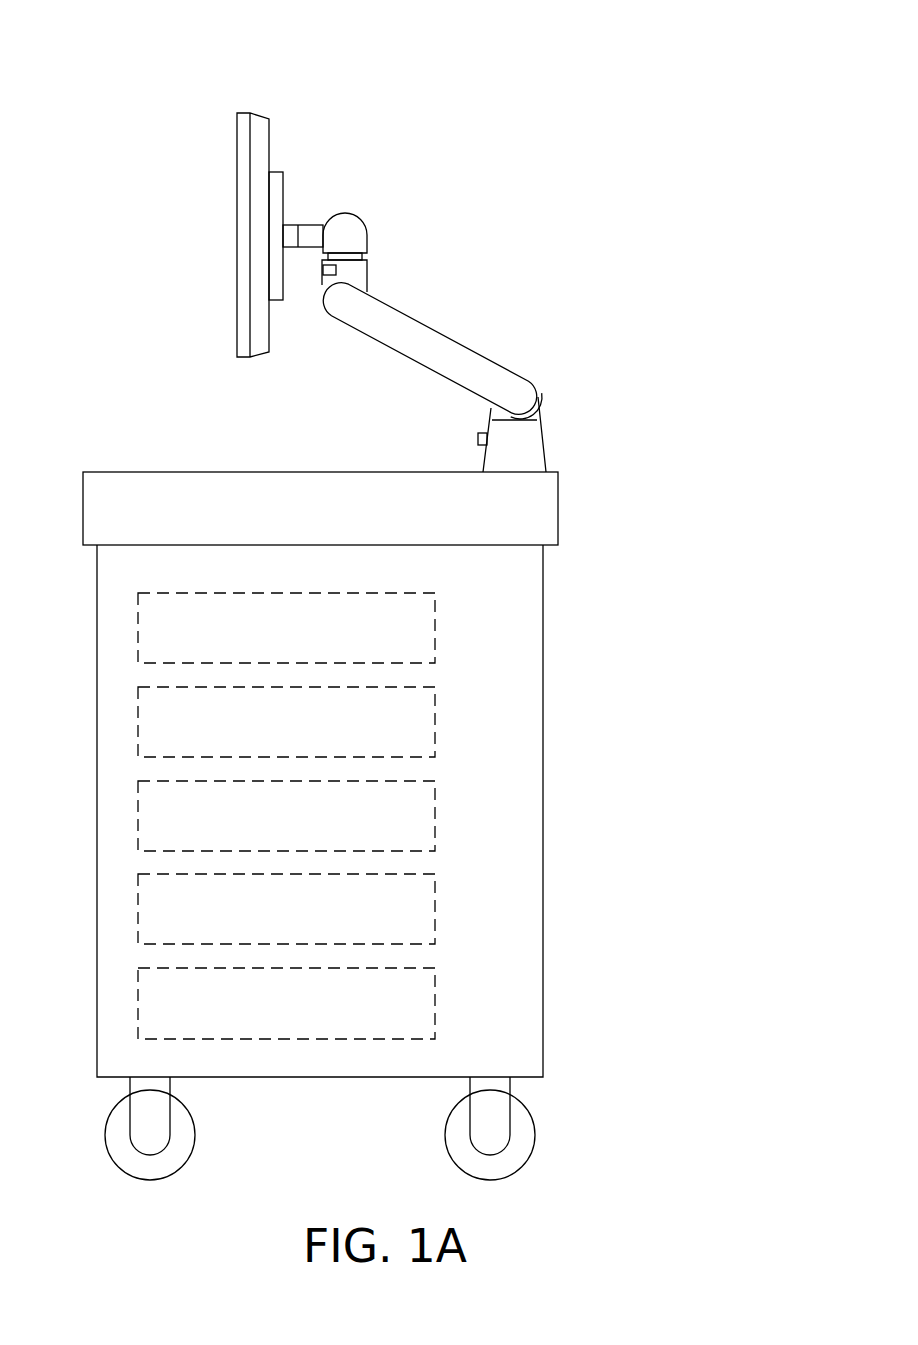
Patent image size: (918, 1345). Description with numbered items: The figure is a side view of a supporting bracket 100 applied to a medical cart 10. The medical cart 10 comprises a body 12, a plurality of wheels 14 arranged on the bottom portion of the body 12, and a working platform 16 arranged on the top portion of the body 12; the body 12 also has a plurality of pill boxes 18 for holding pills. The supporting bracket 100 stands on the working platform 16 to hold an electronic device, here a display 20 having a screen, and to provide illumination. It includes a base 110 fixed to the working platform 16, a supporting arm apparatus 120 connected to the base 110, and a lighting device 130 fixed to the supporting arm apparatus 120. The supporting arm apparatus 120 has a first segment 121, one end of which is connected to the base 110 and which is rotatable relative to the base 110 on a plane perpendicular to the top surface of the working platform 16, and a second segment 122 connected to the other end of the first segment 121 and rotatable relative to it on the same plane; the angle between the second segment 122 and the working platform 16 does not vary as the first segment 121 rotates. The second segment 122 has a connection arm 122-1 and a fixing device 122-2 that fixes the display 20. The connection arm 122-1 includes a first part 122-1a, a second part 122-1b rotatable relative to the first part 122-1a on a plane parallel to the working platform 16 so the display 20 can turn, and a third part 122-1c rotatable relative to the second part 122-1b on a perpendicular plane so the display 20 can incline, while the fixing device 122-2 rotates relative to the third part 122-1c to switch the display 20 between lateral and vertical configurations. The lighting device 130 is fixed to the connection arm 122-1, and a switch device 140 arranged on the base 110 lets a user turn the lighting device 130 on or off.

The medical cart 10 is at (728, 90).
The body 12 is at (525, 785).
The wheels 14 is at (523, 1130).
The working platform 16 is at (535, 510).
The pill boxes 18 is at (138, 640).
The display 20 is at (253, 125).
The supporting bracket 100 is at (659, 193).
The base 110 is at (533, 438).
The supporting arm apparatus 120 is at (594, 157).
The first segment 121 is at (455, 350).
The second segment 122 is at (526, 97).
The connection arm 122-1 is at (363, 207).
The first part 122-1a is at (358, 272).
The second part 122-1b is at (358, 228).
The third part 122-1c is at (306, 233).
The fixing device 122-2 is at (274, 185).
The lighting device 130 is at (321, 276).
The switch device 140 is at (478, 439).